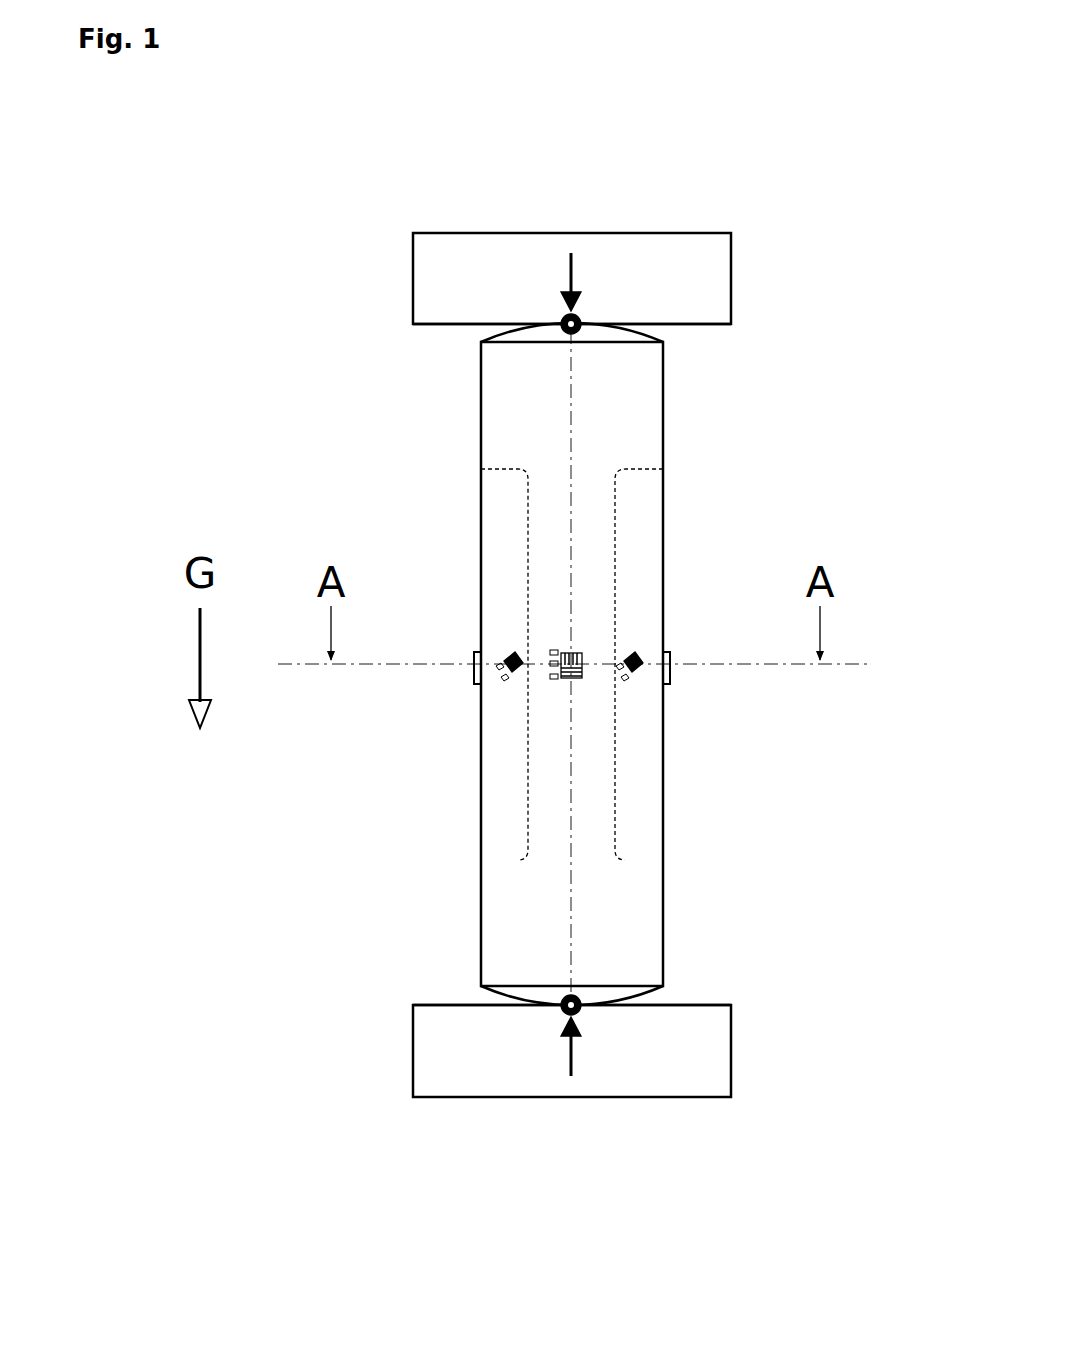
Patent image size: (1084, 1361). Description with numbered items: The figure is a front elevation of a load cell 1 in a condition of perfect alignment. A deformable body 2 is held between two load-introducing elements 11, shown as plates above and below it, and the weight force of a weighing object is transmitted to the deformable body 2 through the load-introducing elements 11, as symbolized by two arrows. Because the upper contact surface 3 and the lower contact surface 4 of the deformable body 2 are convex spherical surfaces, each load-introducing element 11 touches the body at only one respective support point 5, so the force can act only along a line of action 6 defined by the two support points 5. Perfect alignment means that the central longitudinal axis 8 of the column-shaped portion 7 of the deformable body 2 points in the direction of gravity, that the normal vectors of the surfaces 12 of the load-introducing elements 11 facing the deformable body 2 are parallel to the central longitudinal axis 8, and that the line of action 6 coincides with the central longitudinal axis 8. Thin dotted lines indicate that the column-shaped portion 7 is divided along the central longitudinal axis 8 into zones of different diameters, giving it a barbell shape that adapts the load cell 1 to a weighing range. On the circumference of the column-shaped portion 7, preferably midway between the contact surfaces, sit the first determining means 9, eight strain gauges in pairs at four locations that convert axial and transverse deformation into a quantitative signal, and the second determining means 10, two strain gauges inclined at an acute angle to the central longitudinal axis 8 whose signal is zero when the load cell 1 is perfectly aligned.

The load cell 1 is at (318, 1138).
The deformable body 2 is at (330, 903).
The upper contact surface 3 is at (500, 333).
The lower contact surface 4 is at (513, 1000).
The support point 5 is at (566, 318).
The line of action 6 is at (602, 818).
The column-shaped portion 7 is at (687, 495).
The central longitudinal axis 8 is at (570, 425).
The first determining means 9 is at (476, 672).
The second determining means 10 is at (512, 655).
The load-introducing element 11 is at (554, 222).
The surface 12 is at (696, 325).